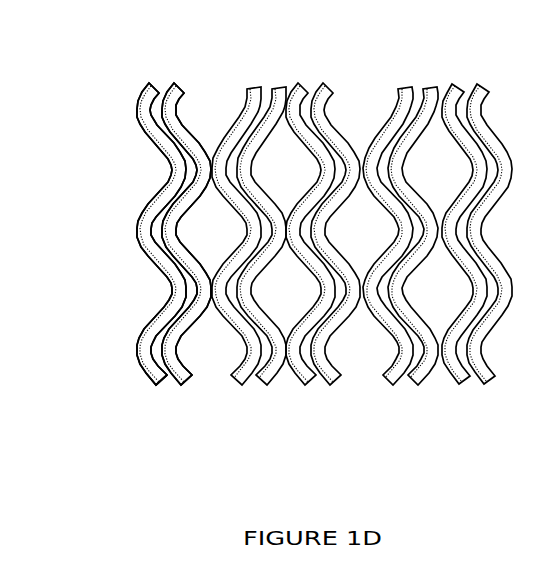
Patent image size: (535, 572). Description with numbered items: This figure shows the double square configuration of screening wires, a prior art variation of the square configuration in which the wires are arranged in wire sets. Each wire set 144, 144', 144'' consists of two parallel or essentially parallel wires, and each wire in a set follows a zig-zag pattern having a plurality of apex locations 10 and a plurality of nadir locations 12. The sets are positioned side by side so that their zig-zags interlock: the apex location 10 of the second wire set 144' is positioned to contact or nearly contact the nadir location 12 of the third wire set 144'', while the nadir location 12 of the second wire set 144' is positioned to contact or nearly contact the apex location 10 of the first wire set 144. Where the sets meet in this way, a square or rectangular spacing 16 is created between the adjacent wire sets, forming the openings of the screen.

The first wire set 144 is at (119, 201).
The second wire set 144' is at (209, 201).
The third wire set 144'' is at (291, 201).
The apex location 10 is at (150, 205).
The nadir location 12 is at (258, 235).
The square or rectangular spacing 16 is at (196, 351).